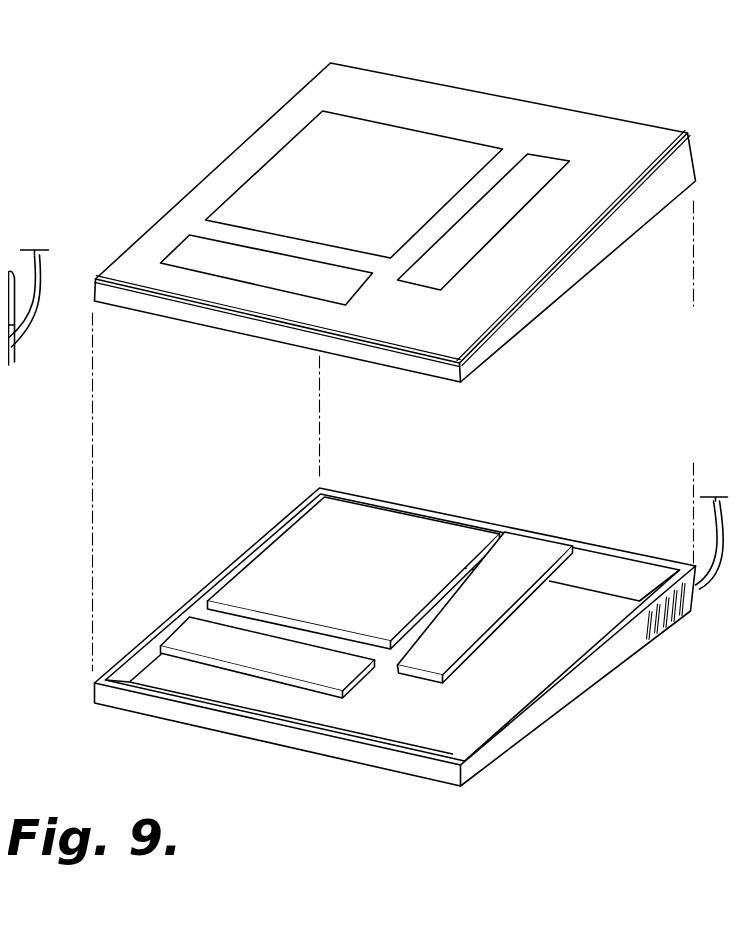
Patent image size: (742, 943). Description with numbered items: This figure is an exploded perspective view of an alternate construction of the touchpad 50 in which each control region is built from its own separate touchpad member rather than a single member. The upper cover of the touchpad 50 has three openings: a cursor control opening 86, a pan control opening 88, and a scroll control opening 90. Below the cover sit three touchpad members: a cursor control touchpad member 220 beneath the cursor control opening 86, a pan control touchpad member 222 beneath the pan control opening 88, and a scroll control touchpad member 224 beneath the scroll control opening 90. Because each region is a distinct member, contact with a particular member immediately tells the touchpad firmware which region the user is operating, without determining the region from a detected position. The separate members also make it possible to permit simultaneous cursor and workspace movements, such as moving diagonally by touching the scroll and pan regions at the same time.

The touchpad 50 is at (140, 121).
The cursor control opening 86 is at (280, 165).
The pan control opening 88 is at (183, 248).
The scroll control opening 90 is at (530, 162).
The cursor control touchpad member 220 is at (198, 635).
The pan control touchpad member 222 is at (406, 506).
The scroll control touchpad member 224 is at (520, 557).